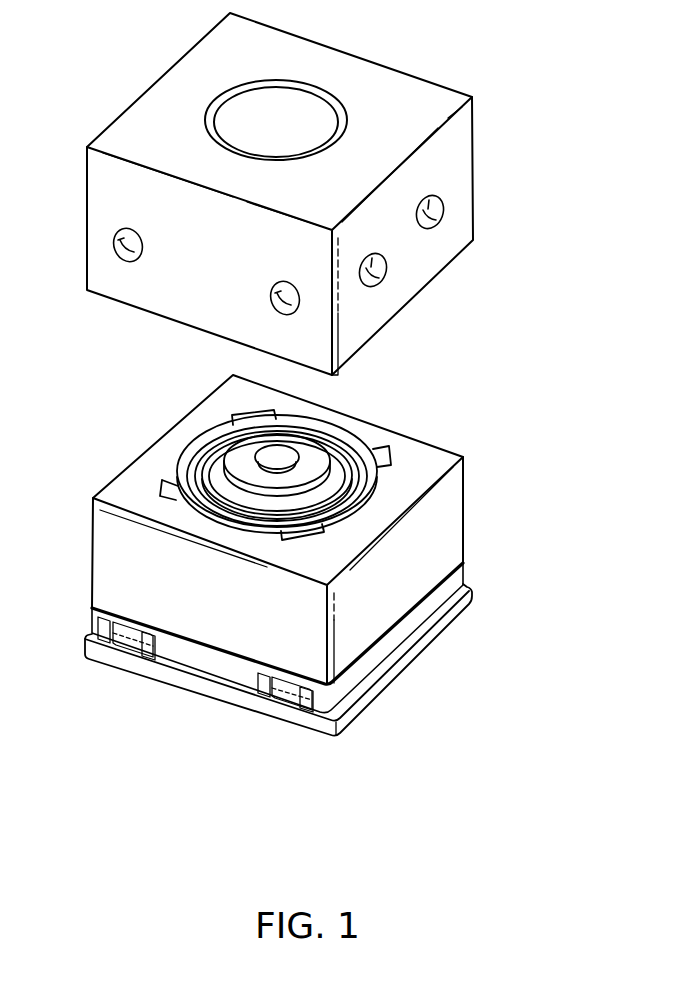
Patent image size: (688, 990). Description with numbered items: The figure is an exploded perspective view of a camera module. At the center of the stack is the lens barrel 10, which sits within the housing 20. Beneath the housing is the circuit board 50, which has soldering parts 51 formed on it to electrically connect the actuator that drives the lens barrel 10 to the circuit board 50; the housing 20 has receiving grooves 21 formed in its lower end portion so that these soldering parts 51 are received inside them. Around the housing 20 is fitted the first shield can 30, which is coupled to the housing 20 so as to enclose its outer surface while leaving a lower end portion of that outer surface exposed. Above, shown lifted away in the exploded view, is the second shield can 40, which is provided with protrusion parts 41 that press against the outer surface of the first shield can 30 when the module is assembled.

The lens barrel 10 is at (317, 448).
The housing 20 is at (420, 618).
The receiving grooves 21 is at (262, 689).
The first shield can 30 is at (420, 447).
The second shield can 40 is at (333, 63).
The protrusion parts 41 is at (122, 242).
The circuit board 50 is at (398, 668).
The soldering parts 51 is at (127, 643).